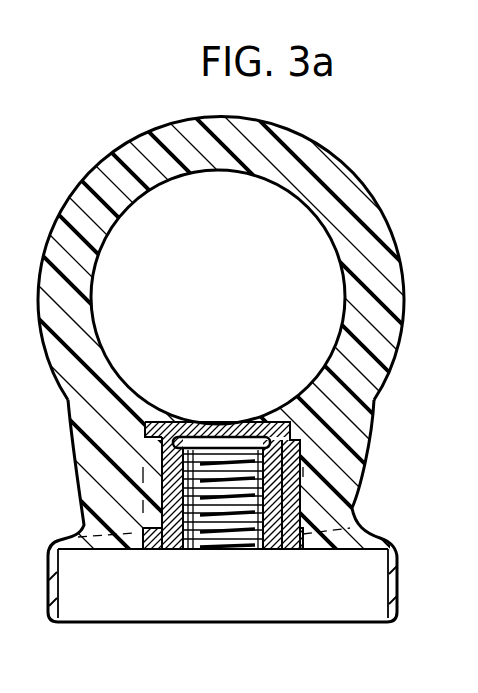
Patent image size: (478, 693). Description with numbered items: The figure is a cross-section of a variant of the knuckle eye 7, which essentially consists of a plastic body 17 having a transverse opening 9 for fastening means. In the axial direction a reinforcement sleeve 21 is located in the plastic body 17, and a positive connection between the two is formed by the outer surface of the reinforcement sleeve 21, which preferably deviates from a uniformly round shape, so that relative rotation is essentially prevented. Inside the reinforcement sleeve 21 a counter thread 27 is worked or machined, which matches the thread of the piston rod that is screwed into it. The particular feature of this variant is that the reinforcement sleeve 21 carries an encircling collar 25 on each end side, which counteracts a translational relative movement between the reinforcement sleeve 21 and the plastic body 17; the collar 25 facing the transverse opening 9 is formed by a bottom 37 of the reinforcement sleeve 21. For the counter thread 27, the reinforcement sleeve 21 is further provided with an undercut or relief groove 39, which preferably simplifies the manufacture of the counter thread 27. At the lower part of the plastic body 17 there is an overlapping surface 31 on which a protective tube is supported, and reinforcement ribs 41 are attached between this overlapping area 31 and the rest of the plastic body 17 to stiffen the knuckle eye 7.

The knuckle eye 7 is at (122, 89).
The transverse opening 9 is at (280, 217).
The plastic body 17 is at (352, 231).
The bottom of the reinforcement sleeve 37 is at (205, 422).
The undercut or relief groove 39 is at (300, 417).
The encircling collar 25 is at (305, 432).
The reinforcement ribs 41 is at (108, 488).
The overlapping surface 31 is at (352, 508).
The counter thread 27 is at (203, 515).
The reinforcement sleeve 21 is at (268, 545).